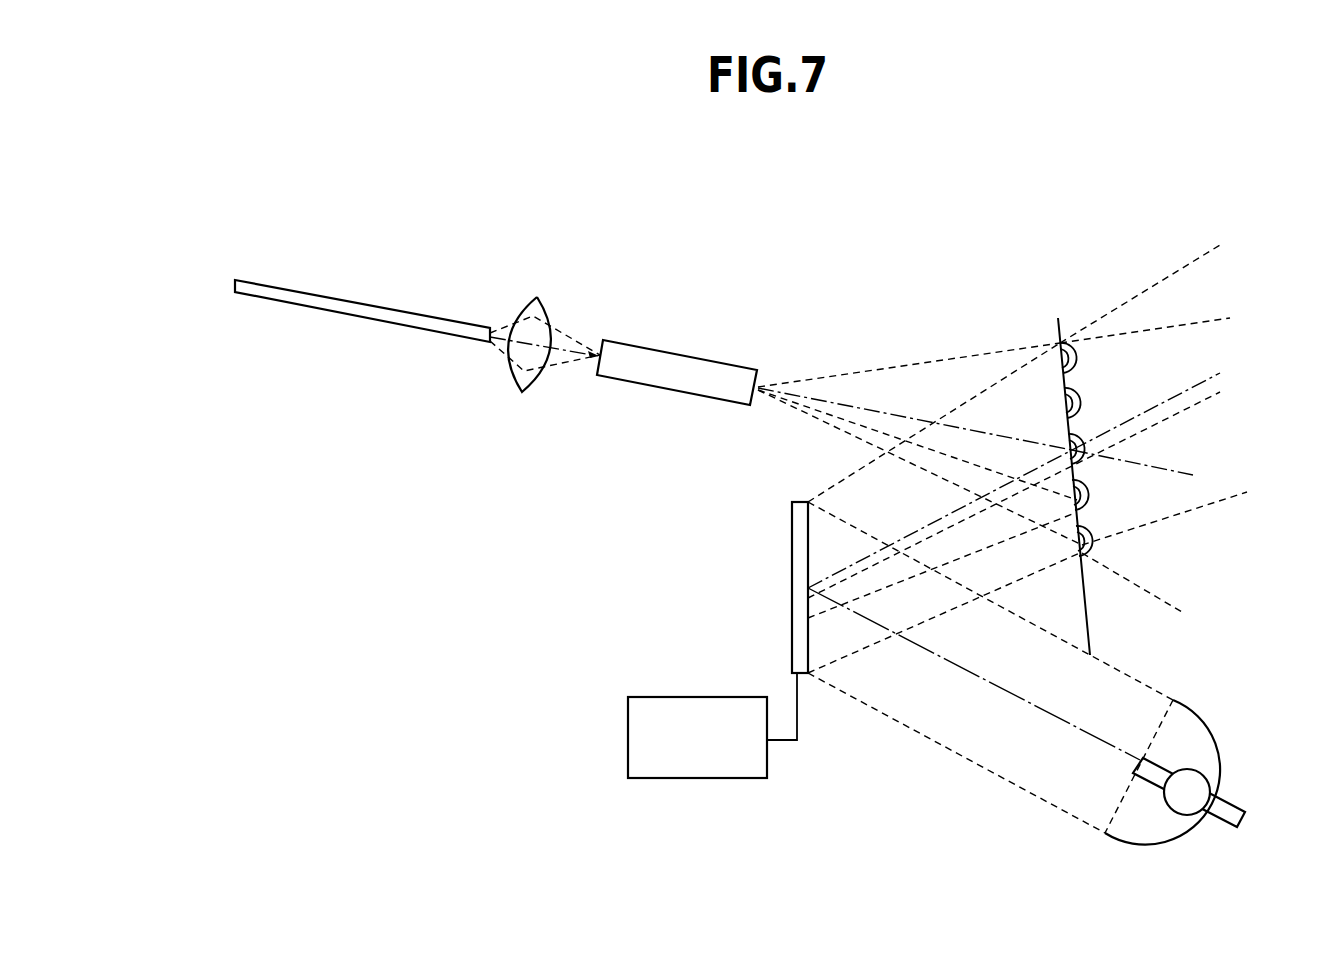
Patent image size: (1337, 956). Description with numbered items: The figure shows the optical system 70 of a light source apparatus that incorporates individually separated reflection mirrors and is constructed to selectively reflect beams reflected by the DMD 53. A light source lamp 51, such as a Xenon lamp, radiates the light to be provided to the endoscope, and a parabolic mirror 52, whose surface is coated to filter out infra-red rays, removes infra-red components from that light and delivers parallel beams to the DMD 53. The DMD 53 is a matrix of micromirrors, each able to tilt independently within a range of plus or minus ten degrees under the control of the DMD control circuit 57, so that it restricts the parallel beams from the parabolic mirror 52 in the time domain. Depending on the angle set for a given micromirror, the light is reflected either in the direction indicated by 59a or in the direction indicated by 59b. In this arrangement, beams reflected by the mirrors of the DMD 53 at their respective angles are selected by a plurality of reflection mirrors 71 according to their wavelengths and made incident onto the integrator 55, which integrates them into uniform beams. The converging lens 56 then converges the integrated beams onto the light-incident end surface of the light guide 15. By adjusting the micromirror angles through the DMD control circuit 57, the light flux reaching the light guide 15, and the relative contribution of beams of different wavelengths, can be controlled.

The optical system 70 is at (945, 222).
The light guide 15 is at (432, 318).
The converging lens 56 is at (538, 296).
The integrator 55 is at (675, 351).
The DMD (Digital Micromirror Device) 53 is at (792, 617).
The reflection mirrors 71 is at (1073, 365).
The reflection direction 59b is at (1153, 283).
The reflection direction 59a is at (1193, 517).
The parabolic mirror 52 is at (1212, 727).
The light source lamp 51 is at (1246, 818).
The DMD control circuit 57 is at (628, 740).